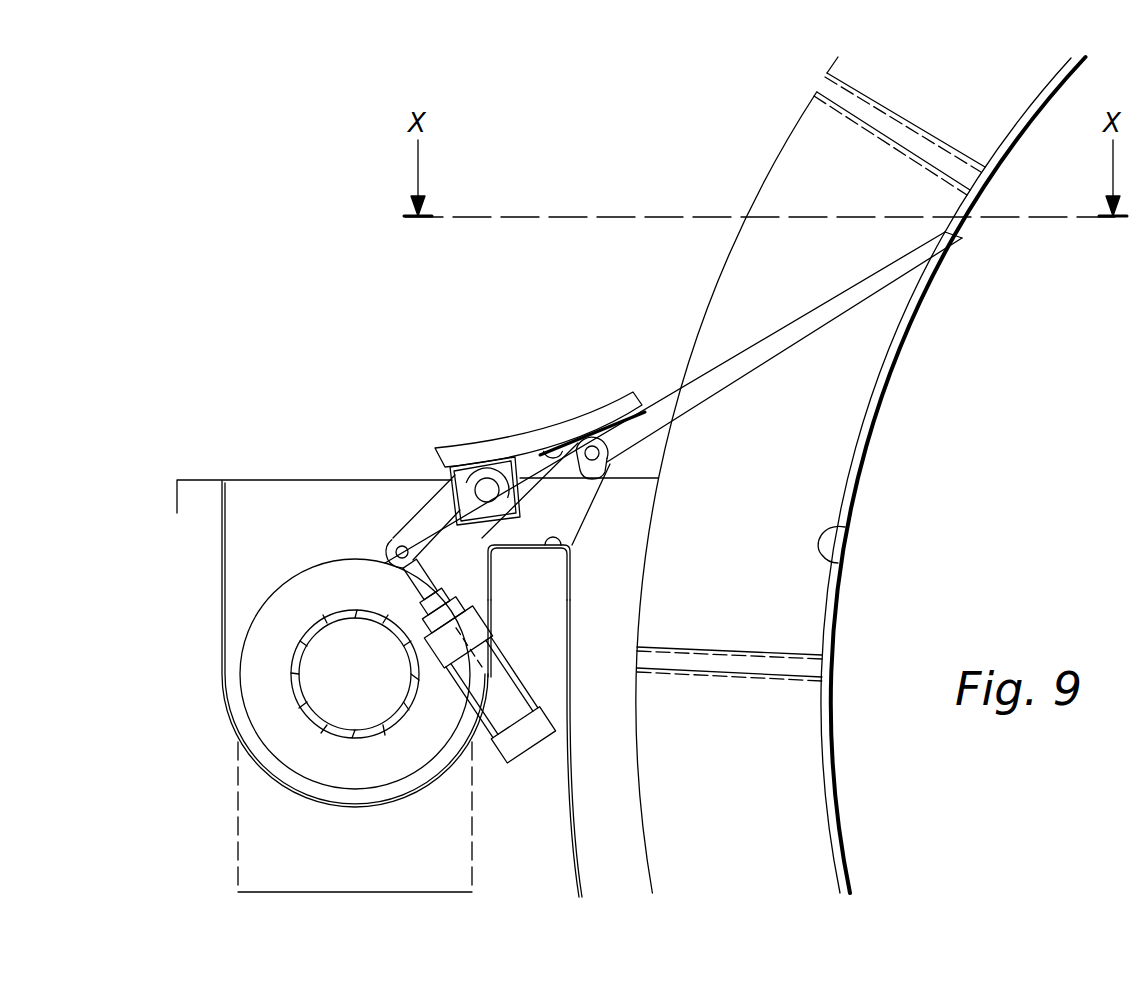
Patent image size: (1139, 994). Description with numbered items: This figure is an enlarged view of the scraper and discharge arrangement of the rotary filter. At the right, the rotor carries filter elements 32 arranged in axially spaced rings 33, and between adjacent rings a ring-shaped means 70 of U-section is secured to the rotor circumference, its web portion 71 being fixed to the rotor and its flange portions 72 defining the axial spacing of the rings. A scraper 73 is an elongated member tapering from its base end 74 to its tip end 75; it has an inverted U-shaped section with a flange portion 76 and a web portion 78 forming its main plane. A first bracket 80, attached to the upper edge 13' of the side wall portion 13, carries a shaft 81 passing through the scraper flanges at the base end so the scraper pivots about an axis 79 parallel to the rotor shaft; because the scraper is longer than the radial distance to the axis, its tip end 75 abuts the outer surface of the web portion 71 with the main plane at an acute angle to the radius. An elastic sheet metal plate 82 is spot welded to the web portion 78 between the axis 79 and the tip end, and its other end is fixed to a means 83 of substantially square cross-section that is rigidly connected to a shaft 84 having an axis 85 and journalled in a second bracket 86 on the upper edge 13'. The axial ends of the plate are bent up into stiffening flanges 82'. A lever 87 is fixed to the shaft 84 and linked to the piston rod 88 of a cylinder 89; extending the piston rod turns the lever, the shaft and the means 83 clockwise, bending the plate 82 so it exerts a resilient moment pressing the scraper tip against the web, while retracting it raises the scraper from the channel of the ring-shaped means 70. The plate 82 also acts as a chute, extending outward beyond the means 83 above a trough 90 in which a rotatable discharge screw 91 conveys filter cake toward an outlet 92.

The side wall portion 13 is at (554, 748).
The upper edge of the side wall portion 13' is at (556, 583).
The filter element 32 is at (725, 280).
The ring of filter elements 33 is at (742, 178).
The ring-shaped means 70 is at (897, 458).
The web portion 71 is at (840, 563).
The flange portion 72 is at (891, 372).
The scraper 73 is at (652, 352).
The base end 74 is at (632, 477).
The tip end 75 is at (924, 217).
The flange portion 76 is at (702, 402).
The web portion 78 is at (838, 292).
The axis 79 is at (600, 447).
The first bracket 80 is at (560, 518).
The shaft 81 is at (579, 472).
The elastic sheet metal plate 82 is at (592, 402).
The stiffening flange 82' is at (548, 413).
The means 83 is at (428, 468).
The shaft 84 is at (486, 478).
The axis 85 is at (436, 532).
The second bracket 86 is at (495, 548).
The lever 87 is at (432, 530).
The piston rod 88 is at (462, 592).
The cylinder 89 is at (490, 662).
The trough 90 is at (233, 716).
The discharge screw 91 is at (302, 587).
The outlet 92 is at (250, 862).